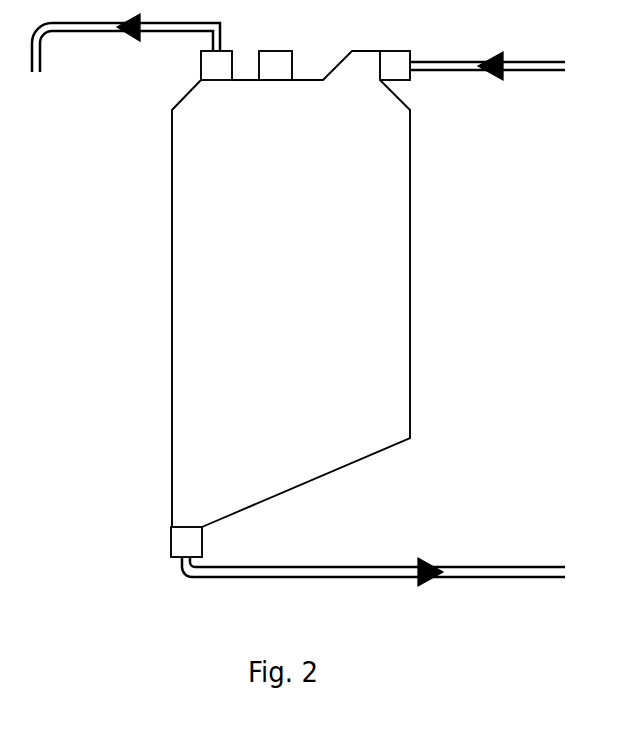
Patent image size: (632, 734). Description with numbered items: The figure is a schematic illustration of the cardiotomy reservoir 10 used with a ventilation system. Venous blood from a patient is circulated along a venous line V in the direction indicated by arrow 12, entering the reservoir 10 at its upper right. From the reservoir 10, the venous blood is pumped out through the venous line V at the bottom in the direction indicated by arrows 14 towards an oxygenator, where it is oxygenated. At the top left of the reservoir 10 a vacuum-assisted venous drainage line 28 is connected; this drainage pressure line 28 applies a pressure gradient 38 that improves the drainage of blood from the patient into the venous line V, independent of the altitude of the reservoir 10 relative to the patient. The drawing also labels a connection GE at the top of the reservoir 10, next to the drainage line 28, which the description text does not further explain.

The reservoir 10 is at (276, 294).
The gas exchange unit / inlet port GE is at (215, 80).
The vacuum-assisted venous drainage line 28 is at (80, 32).
The pressure gradient 38 is at (130, 32).
The arrow 12 is at (497, 77).
The arrows 14 is at (420, 560).
The venous line V is at (460, 70).